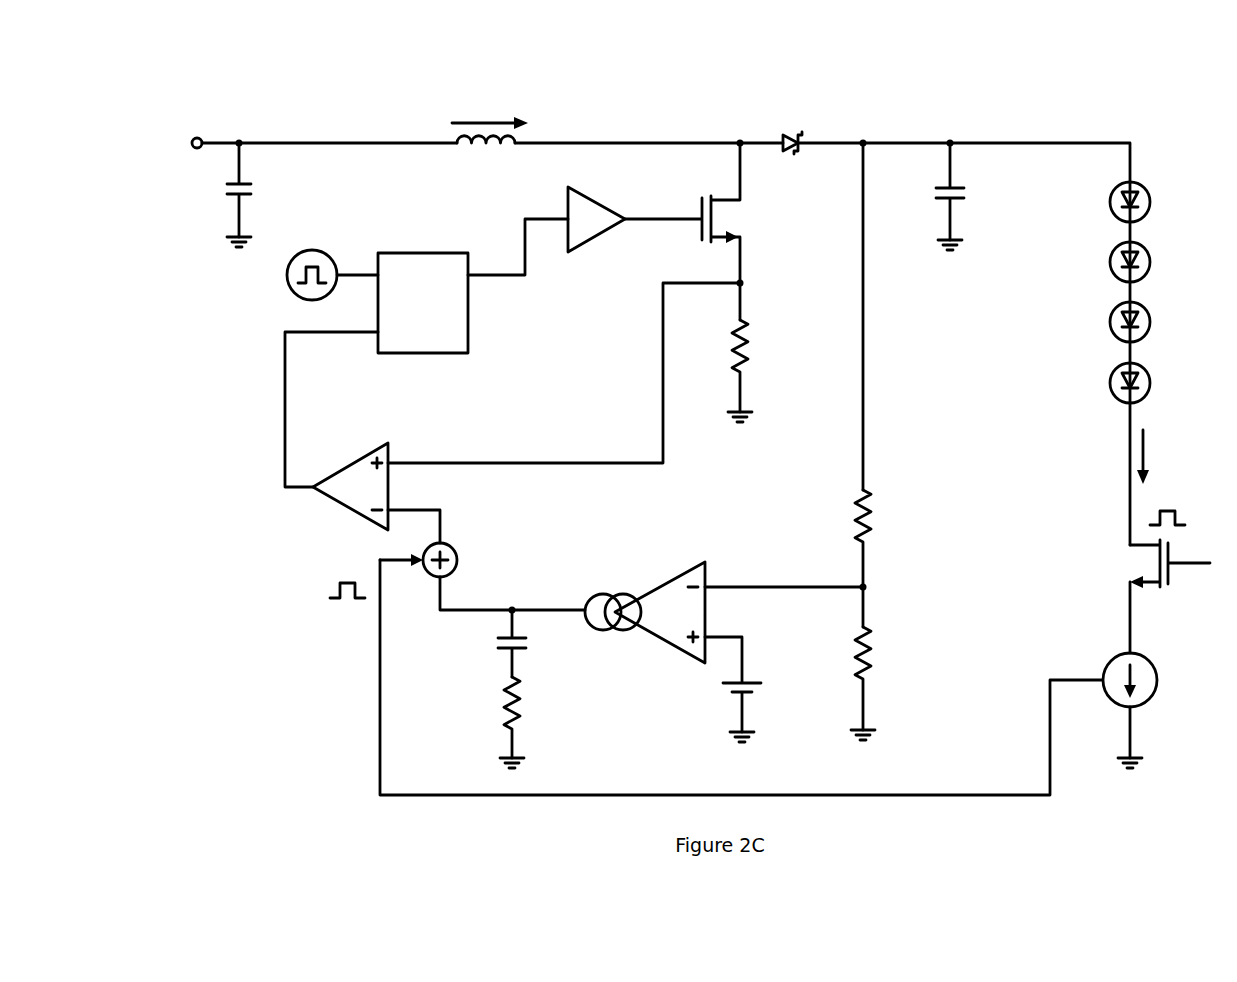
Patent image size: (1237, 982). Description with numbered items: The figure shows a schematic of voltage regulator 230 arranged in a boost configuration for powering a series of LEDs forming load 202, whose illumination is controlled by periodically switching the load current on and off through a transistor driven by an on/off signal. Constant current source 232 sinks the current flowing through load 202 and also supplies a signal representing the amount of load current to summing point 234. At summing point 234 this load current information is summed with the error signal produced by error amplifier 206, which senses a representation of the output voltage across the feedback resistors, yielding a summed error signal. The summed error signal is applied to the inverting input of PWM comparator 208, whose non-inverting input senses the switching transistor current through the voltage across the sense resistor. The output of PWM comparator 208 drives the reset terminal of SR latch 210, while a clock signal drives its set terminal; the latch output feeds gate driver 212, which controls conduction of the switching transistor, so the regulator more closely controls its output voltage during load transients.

The voltage regulator 230 is at (849, 38).
The load 202 is at (1107, 183).
The gate driver 212 is at (596, 246).
The Set-Reset (SR) latch component 210 is at (378, 353).
The pulse width modulation (PWM) comparator 208 is at (350, 509).
The summing point 234 is at (452, 548).
The error amplifier 206 is at (668, 644).
The constant current source 232 is at (1158, 684).